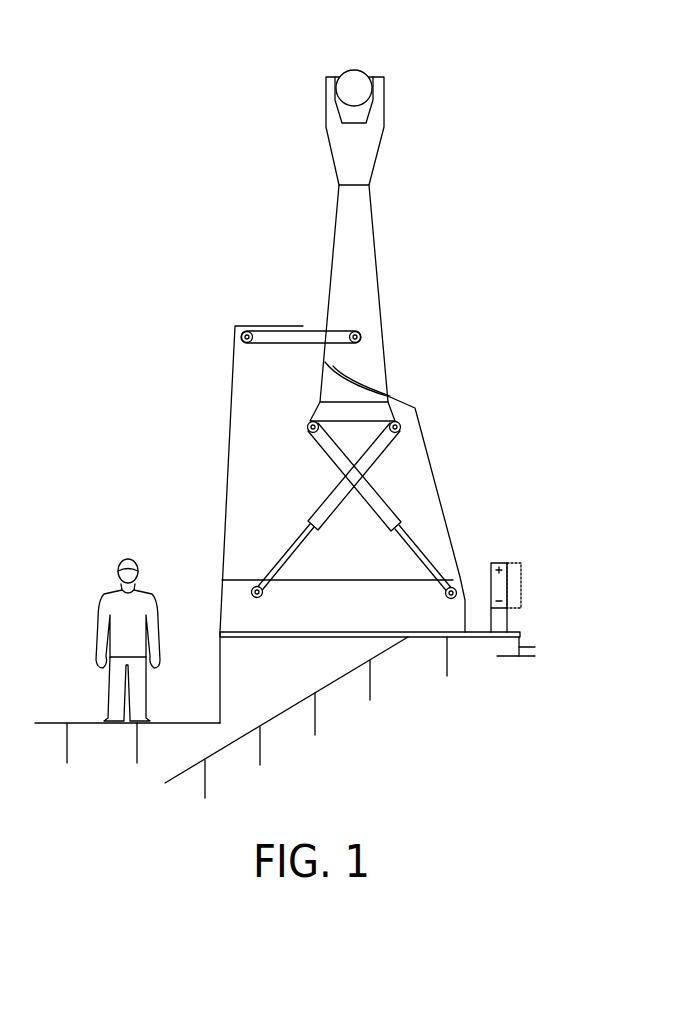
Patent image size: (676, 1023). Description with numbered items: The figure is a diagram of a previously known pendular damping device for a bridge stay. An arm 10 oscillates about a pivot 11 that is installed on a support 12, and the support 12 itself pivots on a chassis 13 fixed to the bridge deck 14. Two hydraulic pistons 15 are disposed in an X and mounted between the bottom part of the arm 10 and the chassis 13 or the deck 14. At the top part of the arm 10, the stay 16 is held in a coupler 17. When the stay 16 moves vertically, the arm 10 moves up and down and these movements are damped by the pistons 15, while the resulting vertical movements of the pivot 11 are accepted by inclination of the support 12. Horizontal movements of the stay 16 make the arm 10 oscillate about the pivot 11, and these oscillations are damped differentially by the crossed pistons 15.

The arm 10 is at (362, 258).
The pivot 11 is at (363, 333).
The support 12 is at (341, 373).
The chassis 13 is at (243, 410).
The bridge deck 14 is at (518, 640).
The hydraulic pistons 15 is at (373, 497).
The stay 16 is at (343, 72).
The coupler 17 is at (367, 150).